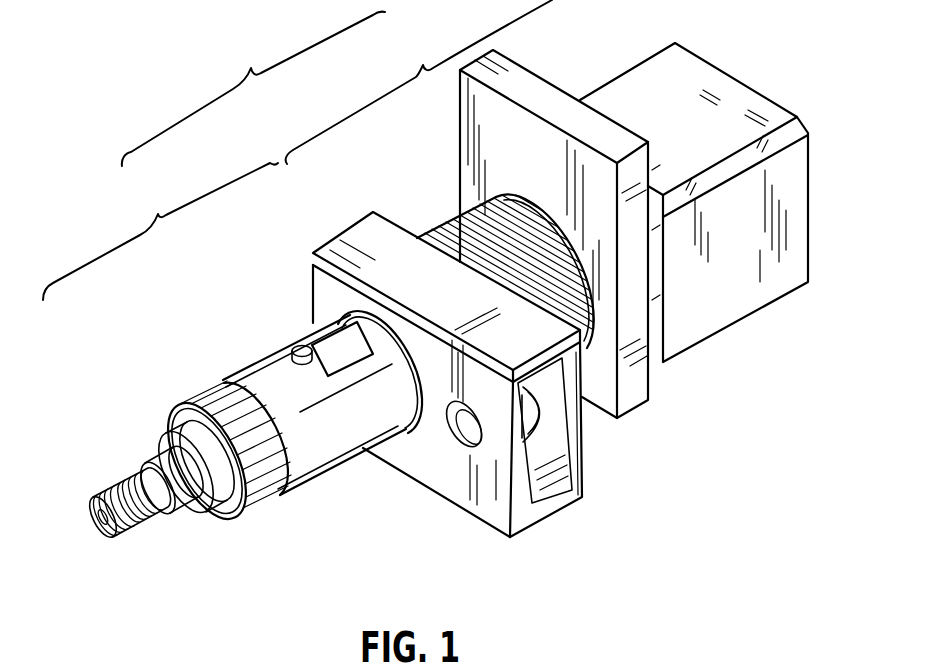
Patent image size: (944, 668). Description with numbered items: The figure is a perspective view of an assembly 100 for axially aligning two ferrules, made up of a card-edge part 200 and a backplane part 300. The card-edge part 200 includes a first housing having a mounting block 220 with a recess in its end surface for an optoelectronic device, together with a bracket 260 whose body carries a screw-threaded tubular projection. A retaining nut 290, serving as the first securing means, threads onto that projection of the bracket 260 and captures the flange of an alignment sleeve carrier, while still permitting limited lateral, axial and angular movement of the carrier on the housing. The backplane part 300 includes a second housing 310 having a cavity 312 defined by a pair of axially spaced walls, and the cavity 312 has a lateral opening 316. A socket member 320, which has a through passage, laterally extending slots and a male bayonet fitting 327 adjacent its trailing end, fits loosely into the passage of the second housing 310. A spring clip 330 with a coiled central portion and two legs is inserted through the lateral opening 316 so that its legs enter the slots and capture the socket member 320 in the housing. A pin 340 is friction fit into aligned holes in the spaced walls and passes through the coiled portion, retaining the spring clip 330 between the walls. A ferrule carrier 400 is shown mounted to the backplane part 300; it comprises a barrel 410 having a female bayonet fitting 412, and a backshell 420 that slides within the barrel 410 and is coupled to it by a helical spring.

The assembly 100 is at (253, 89).
The card-edge part 200 is at (419, 82).
The mounting block 220 is at (712, 67).
The bracket 260 is at (630, 397).
The retaining nut 290 is at (433, 227).
The backplane part 300 is at (160, 231).
The second housing 310 is at (493, 507).
The cavity 312 is at (548, 485).
The lateral opening 316 is at (565, 452).
The socket member 320 is at (407, 428).
The male bayonet fitting 327 is at (300, 348).
The spring clip 330 is at (560, 415).
The pin 340 is at (465, 440).
The ferrule carrier 400 is at (277, 503).
The barrel 410 is at (320, 477).
The female bayonet fitting 412 is at (253, 363).
The backshell 420 is at (170, 510).